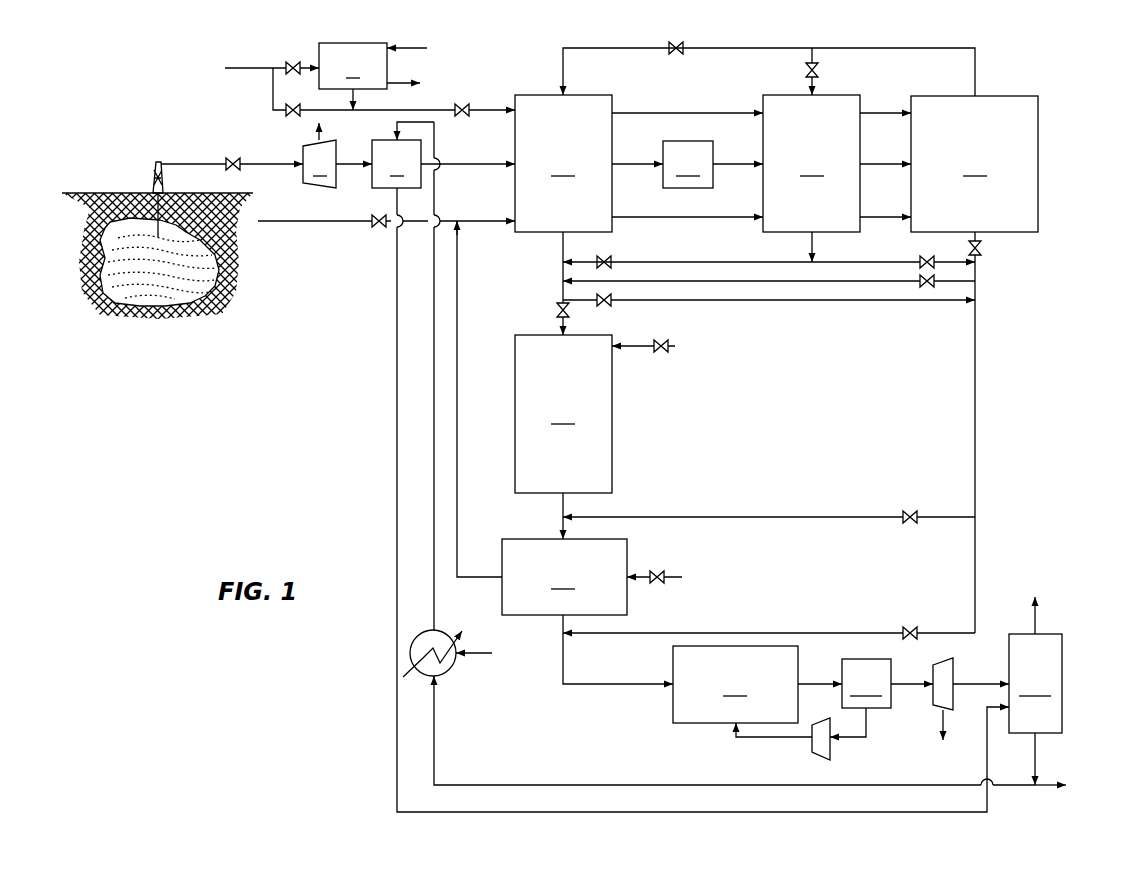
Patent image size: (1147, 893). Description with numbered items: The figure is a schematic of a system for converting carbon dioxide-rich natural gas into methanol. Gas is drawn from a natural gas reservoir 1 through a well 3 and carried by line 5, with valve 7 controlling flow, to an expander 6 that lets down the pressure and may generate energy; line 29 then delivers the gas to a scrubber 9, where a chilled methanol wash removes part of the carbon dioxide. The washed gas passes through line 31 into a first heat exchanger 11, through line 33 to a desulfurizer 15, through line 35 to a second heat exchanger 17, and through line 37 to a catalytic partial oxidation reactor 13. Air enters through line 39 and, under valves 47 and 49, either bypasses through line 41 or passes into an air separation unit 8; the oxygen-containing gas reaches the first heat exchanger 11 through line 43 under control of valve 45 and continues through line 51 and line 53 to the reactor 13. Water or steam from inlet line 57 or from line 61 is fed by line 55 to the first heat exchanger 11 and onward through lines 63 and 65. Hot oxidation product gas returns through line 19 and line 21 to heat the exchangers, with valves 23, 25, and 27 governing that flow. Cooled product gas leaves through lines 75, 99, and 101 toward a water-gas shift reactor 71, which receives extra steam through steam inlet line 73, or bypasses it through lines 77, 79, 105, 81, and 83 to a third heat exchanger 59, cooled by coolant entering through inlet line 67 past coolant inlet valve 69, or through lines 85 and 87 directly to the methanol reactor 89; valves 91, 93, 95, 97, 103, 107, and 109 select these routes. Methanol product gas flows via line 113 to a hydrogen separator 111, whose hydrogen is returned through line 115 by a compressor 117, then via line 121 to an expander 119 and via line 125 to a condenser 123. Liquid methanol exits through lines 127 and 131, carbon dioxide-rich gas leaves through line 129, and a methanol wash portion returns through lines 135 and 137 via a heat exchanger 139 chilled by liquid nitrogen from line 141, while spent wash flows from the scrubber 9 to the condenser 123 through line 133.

The natural gas reservoir 1 is at (143, 292).
The natural gas well 3 is at (153, 180).
The line 5 is at (250, 163).
The expander 6 is at (320, 151).
The valve 7 is at (228, 160).
The air separation unit 8 is at (382, 63).
The scrubber 9 is at (396, 164).
The first heat exchanger 11 is at (563, 163).
The catalytic partial oxidation reactor 13 is at (974, 164).
The desulfurizer 15 is at (688, 164).
The second heat exchanger 17 is at (811, 163).
The line 19 is at (870, 48).
The line 21 is at (818, 80).
The valve 23 is at (680, 48).
The valve 25 is at (805, 72).
The valve 27 is at (980, 250).
The line 29 is at (342, 160).
The line 31 is at (485, 162).
The line 33 is at (628, 166).
The line 35 is at (728, 166).
The line 37 is at (873, 166).
The line 39 is at (233, 66).
The line 41 is at (272, 85).
The line 43 is at (485, 107).
The valve 45 is at (467, 115).
The valve 47 is at (285, 118).
The valve 49 is at (292, 62).
The line 51 is at (655, 112).
The line 53 is at (882, 112).
The line 55 is at (468, 224).
The inlet line 57 is at (348, 219).
The third heat exchanger 59 is at (564, 577).
The line 61 is at (460, 428).
The line 63 is at (650, 218).
The line 65 is at (875, 220).
The inlet line 67 is at (672, 577).
The third heat exchanger coolant inlet valve 69 is at (660, 570).
The water-gas shift reactor 71 is at (563, 414).
The steam inlet line 73 is at (640, 350).
The line 75 is at (553, 243).
The line 77 is at (838, 302).
The line 79 is at (977, 388).
The line 81 is at (832, 517).
The line 83 is at (560, 528).
The line 85 is at (760, 633).
The line 87 is at (618, 684).
The reactor 89 is at (735, 684).
The valve 91 is at (556, 310).
The valve 93 is at (606, 304).
The valve 95 is at (915, 517).
The valve 97 is at (912, 633).
The line 99 is at (805, 247).
The line 101 is at (692, 262).
The valve 103 is at (608, 262).
The line 105 is at (762, 283).
The valve 107 is at (930, 285).
The valve 109 is at (925, 258).
The hydrogen separator 111 is at (866, 683).
The line 113 is at (812, 680).
The line 115 is at (758, 738).
The compressor 117 is at (820, 760).
The expander 119 is at (942, 660).
The line 121 is at (912, 686).
The condenser 123 is at (1035, 683).
The line 125 is at (975, 686).
The line 127 is at (1040, 760).
The line 129 is at (1040, 622).
The line 131 is at (1050, 787).
The line 133 is at (392, 410).
The line 135 is at (490, 786).
The line 137 is at (437, 618).
The heat exchanger 139 is at (447, 677).
The line 141 is at (400, 87).